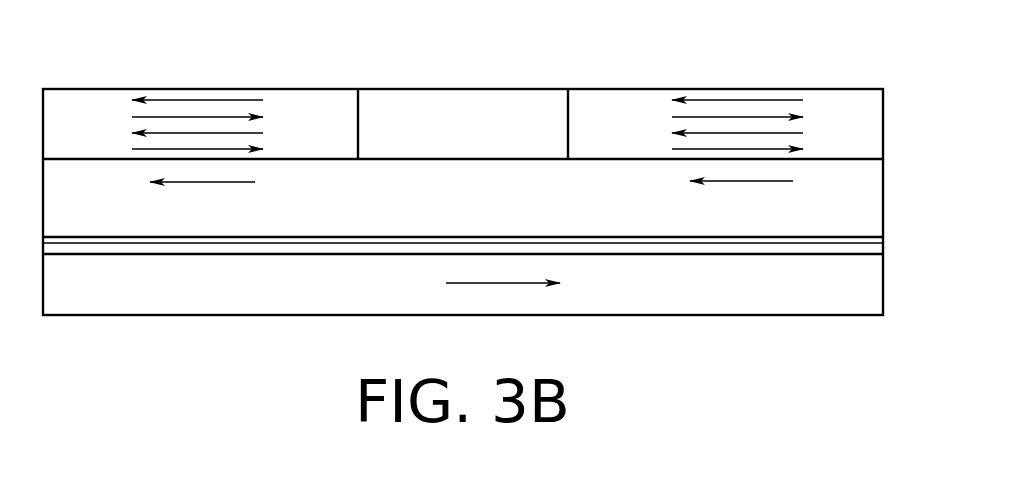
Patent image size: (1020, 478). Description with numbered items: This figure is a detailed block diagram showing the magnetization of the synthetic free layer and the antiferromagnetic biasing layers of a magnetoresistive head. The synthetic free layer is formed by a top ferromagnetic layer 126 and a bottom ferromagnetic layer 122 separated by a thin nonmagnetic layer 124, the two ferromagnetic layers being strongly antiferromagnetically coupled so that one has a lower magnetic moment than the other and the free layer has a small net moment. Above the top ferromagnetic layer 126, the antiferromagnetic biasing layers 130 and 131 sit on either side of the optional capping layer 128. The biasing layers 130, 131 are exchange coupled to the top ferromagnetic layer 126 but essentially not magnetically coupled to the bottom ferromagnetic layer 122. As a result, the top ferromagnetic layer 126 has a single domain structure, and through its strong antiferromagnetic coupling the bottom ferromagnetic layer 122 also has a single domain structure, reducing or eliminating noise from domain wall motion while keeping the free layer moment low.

The bottom ferromagnetic layer 122 is at (327, 316).
The nonmagnetic layer 124 is at (192, 254).
The top ferromagnetic layer 126 is at (95, 240).
The capping layer 128 is at (470, 89).
The antiferromagnetic biasing layer 130 is at (195, 89).
The antiferromagnetic biasing layer 131 is at (722, 89).